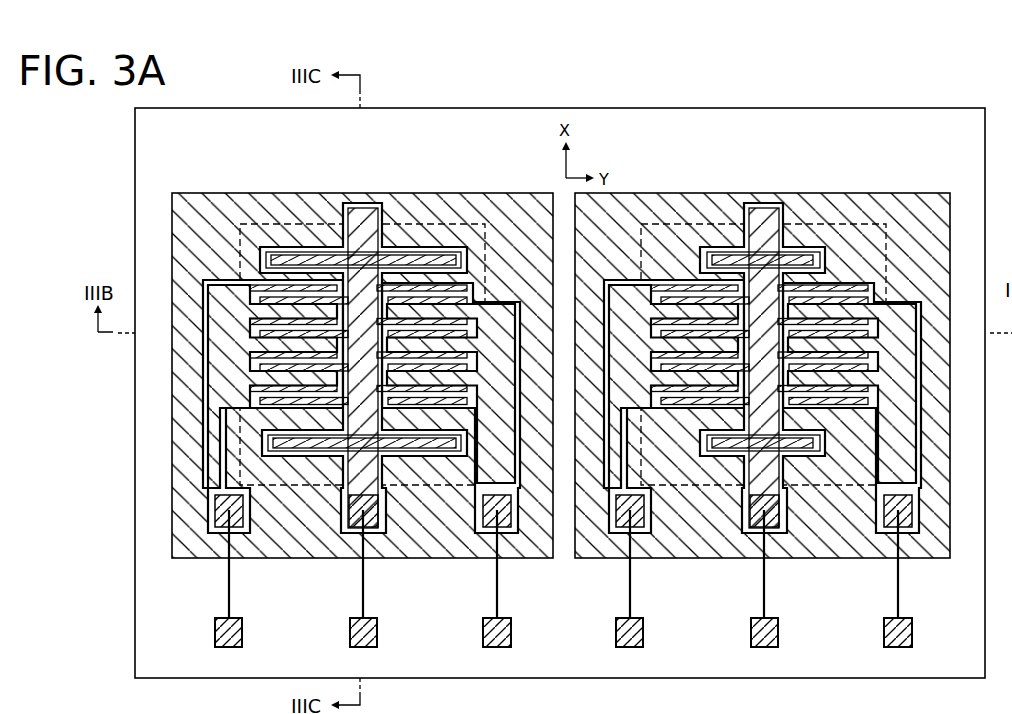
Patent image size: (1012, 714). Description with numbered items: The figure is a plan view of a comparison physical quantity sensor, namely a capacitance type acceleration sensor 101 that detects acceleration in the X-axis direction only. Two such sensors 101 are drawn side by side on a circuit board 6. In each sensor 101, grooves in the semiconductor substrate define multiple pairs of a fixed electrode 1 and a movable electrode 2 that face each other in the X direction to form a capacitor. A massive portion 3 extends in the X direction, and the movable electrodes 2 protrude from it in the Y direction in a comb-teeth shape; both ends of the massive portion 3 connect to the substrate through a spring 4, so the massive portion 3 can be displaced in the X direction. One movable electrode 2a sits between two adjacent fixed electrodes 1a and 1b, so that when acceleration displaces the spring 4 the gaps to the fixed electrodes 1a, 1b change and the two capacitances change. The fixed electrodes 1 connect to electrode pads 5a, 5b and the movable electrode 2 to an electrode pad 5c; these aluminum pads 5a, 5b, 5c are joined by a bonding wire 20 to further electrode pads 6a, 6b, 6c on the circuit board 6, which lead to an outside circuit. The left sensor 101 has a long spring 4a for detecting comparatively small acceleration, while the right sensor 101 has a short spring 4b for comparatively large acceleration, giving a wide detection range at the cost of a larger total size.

The fixed electrode 1 is at (245, 276).
The fixed electrode 1a is at (398, 306).
The fixed electrode 1b is at (456, 350).
The movable electrode 2 is at (268, 341).
The movable electrode 2a is at (428, 331).
The massive portion 3 is at (262, 379).
The spring 4 is at (263, 258).
The long spring 4a is at (363, 260).
The short spring 4b is at (716, 258).
The electrode pad 5a is at (491, 523).
The electrode pad 5b is at (222, 523).
The electrode pad 5c is at (356, 523).
The circuit board 6 is at (689, 108).
The electrode pad 6a is at (512, 631).
The electrode pad 6b is at (243, 631).
The electrode pad 6c is at (378, 631).
The bonding wire 20 is at (226, 599).
The capacitance type acceleration sensor 101 is at (244, 184).